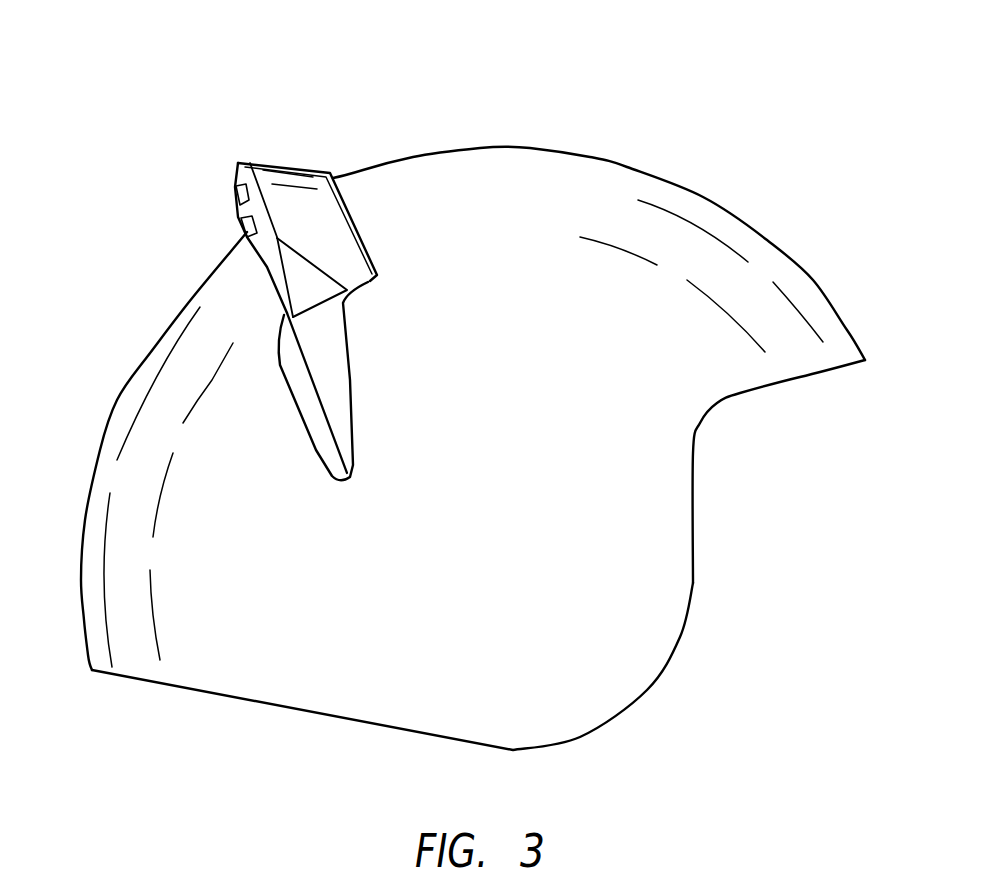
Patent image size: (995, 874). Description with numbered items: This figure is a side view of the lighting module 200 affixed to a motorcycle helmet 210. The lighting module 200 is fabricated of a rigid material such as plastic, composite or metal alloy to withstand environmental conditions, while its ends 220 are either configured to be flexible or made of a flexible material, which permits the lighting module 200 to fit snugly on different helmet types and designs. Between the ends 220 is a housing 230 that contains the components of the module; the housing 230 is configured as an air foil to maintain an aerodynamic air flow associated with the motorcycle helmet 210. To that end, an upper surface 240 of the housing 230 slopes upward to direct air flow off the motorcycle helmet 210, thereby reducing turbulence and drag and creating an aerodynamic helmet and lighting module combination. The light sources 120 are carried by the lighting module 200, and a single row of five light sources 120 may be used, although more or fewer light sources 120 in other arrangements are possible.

The lighting module 200 is at (190, 138).
The motorcycle helmet 210 is at (773, 210).
The ends 220 is at (355, 393).
The housing 230 is at (260, 155).
The upper surface 240 is at (300, 185).
The light sources 120 is at (237, 190).